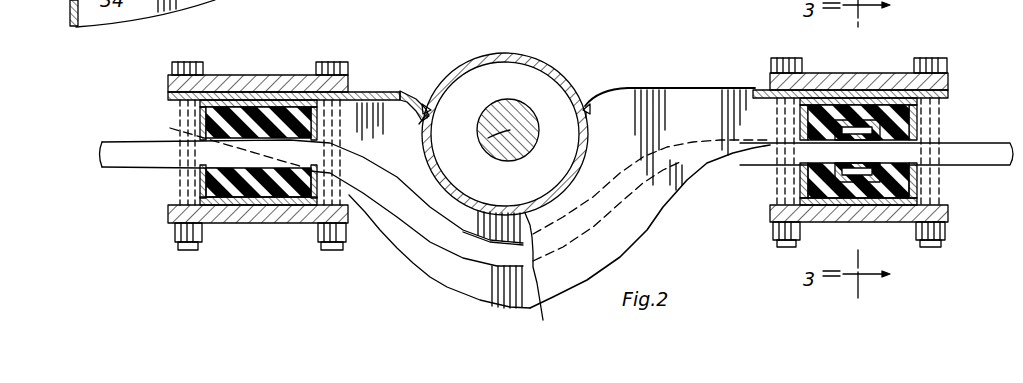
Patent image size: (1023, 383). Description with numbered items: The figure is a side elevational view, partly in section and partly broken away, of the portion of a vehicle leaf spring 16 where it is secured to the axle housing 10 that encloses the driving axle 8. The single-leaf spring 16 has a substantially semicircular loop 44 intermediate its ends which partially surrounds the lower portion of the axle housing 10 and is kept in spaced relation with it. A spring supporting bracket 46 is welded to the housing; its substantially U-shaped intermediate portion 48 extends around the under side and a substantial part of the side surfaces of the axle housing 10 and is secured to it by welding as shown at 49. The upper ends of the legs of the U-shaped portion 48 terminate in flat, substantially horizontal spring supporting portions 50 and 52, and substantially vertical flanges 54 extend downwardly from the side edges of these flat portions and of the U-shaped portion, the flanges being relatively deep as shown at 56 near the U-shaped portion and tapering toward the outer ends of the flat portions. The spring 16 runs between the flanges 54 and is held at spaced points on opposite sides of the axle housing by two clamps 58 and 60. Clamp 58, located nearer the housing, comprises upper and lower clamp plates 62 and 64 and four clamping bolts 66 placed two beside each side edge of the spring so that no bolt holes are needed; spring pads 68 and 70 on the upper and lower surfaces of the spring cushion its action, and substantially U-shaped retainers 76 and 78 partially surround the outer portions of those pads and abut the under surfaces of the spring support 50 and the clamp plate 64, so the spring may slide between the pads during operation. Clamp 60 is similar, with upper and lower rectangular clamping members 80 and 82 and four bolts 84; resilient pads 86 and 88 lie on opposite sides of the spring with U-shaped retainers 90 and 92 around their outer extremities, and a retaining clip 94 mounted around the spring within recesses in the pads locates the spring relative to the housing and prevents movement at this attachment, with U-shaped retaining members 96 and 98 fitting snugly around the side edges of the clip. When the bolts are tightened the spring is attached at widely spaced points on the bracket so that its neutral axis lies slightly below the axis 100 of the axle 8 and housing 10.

The driving axle 8 is at (490, 110).
The tubular housing 10 is at (555, 68).
The leaf spring 16 is at (967, 147).
The loop 44 is at (500, 248).
The spring supporting bracket 46 is at (682, 82).
The U-shaped intermediate portion 48 is at (422, 122).
The welding 49 is at (428, 106).
The spring supporting portion 50 is at (357, 94).
The spring supporting portion 52 is at (760, 90).
The vertical flange 54 is at (170, 128).
The deep flange portion 56 is at (560, 283).
The clamp 58 is at (160, 80).
The clamp 60 is at (956, 68).
The upper clamp plate 62 is at (200, 74).
The lower clamp plate 64 is at (283, 222).
The clamping bolt 66 is at (186, 178).
The spring pad 68 is at (203, 112).
The spring pad 70 is at (293, 190).
The U-shaped retainer 76 is at (263, 99).
The U-shaped retainer 78 is at (222, 205).
The upper clamping member 80 is at (868, 80).
The lower clamping member 82 is at (950, 215).
The bolt 84 is at (778, 246).
The resilient pad 86 is at (903, 122).
The resilient pad 88 is at (827, 199).
The U-shaped retainer 90 is at (815, 102).
The U-shaped retainer 92 is at (803, 187).
The retaining clip 94 is at (870, 180).
The U-shaped retaining member 96 is at (852, 122).
The U-shaped retaining member 98 is at (853, 182).
The axis 100 is at (510, 130).